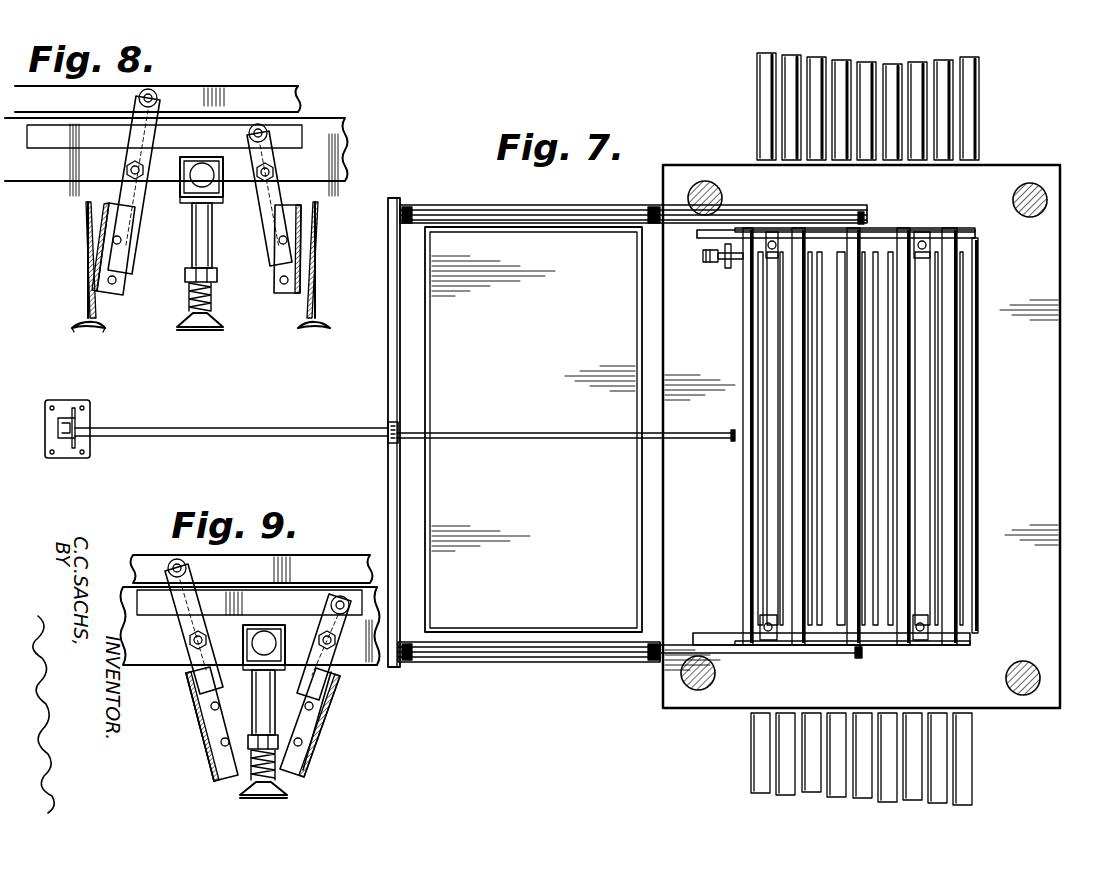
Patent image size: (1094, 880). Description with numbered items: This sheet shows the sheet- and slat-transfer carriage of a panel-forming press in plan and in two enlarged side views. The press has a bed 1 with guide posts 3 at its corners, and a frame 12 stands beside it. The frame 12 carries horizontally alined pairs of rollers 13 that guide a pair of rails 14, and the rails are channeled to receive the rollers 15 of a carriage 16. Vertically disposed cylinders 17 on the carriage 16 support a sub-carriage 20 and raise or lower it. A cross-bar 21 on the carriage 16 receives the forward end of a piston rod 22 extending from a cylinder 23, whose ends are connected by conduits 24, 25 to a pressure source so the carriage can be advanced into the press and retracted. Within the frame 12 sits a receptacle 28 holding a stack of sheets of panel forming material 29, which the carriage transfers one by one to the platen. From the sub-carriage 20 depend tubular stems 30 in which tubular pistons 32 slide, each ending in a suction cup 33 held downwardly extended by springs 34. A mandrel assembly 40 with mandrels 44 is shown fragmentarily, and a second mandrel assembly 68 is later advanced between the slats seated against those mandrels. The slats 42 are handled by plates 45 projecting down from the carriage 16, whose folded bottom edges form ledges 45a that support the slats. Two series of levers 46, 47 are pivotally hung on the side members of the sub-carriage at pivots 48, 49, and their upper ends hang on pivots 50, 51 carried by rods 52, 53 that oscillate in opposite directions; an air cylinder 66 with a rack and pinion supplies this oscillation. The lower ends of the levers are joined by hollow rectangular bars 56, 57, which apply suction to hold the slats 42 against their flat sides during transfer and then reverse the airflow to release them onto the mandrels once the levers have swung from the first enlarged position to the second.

In FIG. 7, the bed 1 is at (1063, 311).
In FIG. 7, the guide posts 3 is at (722, 198).
In FIG. 7, the frame 12 is at (382, 402).
In FIG. 7, the rollers 13 is at (410, 206).
In FIG. 7, the rails 14 is at (545, 205).
In FIG. 7, the rollers 15 is at (858, 658).
In FIG. 7, the carriage 16 is at (890, 230).
In FIG. 7, the cylinders 17 is at (776, 232).
In FIG. 8, the sub-carriage 20 is at (348, 138).
In FIG. 9, the sub-carriage 20 is at (142, 650).
In FIG. 7, the sub-carriage 20 is at (975, 234).
In FIG. 7, the cross-bar 21 is at (735, 477).
In FIG. 7, the piston rod 22 is at (526, 432).
In FIG. 7, the cylinder 23 is at (242, 428).
In FIG. 7, the conduit 24 is at (94, 446).
In FIG. 7, the conduit 25 is at (392, 441).
In FIG. 7, the receptacle 28 is at (640, 580).
In FIG. 7, the sheets of panel forming material 29 is at (618, 532).
In FIG. 8, the tubular stems 30 is at (213, 246).
In FIG. 9, the tubular stems 30 is at (262, 690).
In FIG. 8, the tubular pistons 32 is at (190, 294).
In FIG. 9, the tubular pistons 32 is at (254, 784).
In FIG. 8, the suction cup 33 is at (200, 330).
In FIG. 9, the suction cup 33 is at (266, 798).
In FIG. 8, the springs 34 is at (216, 278).
In FIG. 9, the springs 34 is at (273, 772).
In FIG. 7, the mandrel assembly 40 is at (988, 112).
In FIG. 8, the slats 42 is at (86, 250).
In FIG. 9, the slats 42 is at (193, 706).
In FIG. 7, the mandrels 44 is at (757, 142).
In FIG. 8, the plates 45 is at (86, 284).
In FIG. 8, the ledges 45a is at (78, 330).
In FIG. 8, the levers 46 is at (130, 210).
In FIG. 9, the levers 46 is at (192, 680).
In FIG. 8, the levers 47 is at (266, 208).
In FIG. 9, the levers 47 is at (338, 681).
In FIG. 8, the pivot 48 is at (126, 170).
In FIG. 9, the pivot 48 is at (189, 640).
In FIG. 8, the pivot 49 is at (274, 172).
In FIG. 9, the pivot 49 is at (318, 640).
In FIG. 8, the pivot 50 is at (156, 93).
In FIG. 9, the pivot 50 is at (188, 568).
In FIG. 8, the pivot 51 is at (268, 129).
In FIG. 9, the pivot 51 is at (346, 596).
In FIG. 9, the rod 52 is at (332, 556).
In FIG. 8, the rod 53 is at (44, 148).
In FIG. 9, the rod 53 is at (283, 604).
In FIG. 8, the hollow rectangular bar 56 is at (128, 258).
In FIG. 9, the hollow rectangular bar 56 is at (212, 745).
In FIG. 8, the hollow rectangular bar 57 is at (294, 290).
In FIG. 9, the hollow rectangular bar 57 is at (304, 768).
In FIG. 7, the air cylinder 66 is at (710, 266).
In FIG. 7, the second mandrel assembly 68 is at (977, 760).